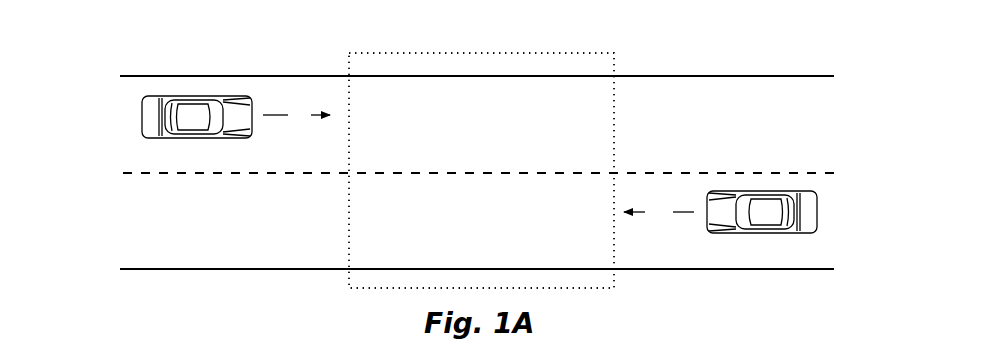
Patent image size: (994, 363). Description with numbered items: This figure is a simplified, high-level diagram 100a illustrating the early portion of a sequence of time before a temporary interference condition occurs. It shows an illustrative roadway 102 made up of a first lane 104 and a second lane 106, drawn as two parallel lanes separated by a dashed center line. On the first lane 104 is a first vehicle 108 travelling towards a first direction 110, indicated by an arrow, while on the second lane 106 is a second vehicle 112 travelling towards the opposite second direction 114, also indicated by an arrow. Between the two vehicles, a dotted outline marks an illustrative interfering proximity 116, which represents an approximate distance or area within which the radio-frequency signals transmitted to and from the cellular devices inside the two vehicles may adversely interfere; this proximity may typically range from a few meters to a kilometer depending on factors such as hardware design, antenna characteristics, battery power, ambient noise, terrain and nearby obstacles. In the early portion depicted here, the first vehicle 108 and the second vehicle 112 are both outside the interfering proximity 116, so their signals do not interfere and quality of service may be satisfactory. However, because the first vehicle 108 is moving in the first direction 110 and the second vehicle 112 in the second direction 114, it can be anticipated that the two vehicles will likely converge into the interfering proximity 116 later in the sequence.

The diagram 100a is at (822, 49).
The roadway 102 is at (666, 73).
The first lane 104 is at (92, 130).
The second lane 106 is at (93, 228).
The first vehicle 108 is at (197, 128).
The first direction 110 is at (296, 115).
The second vehicle 112 is at (762, 224).
The second direction 114 is at (659, 212).
The interfering proximity 116 is at (621, 99).